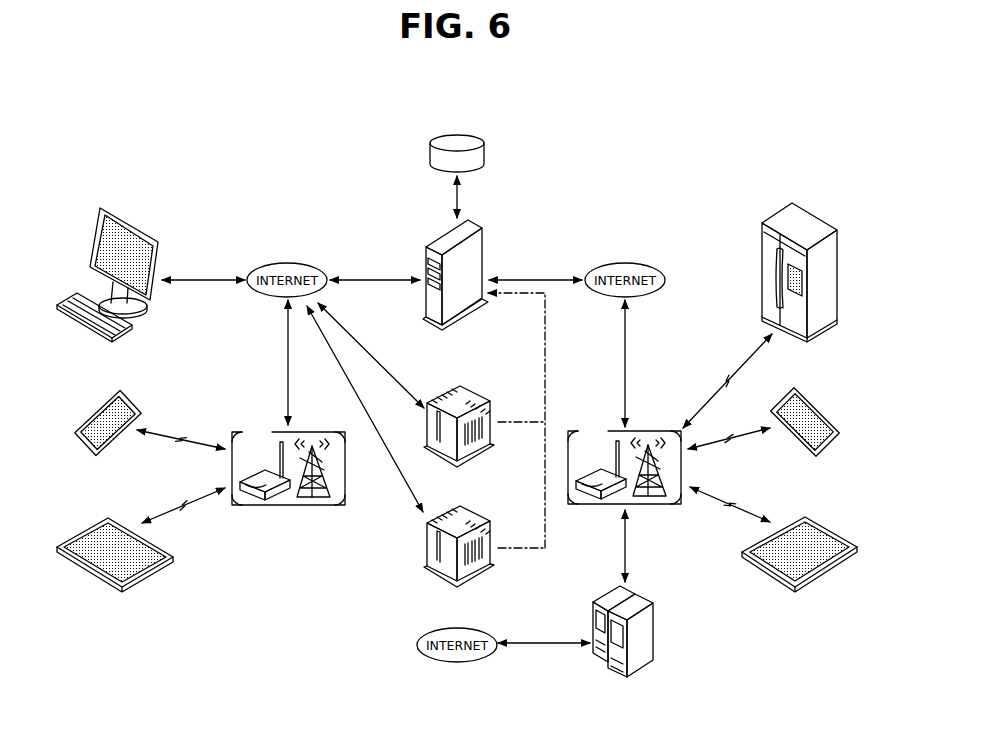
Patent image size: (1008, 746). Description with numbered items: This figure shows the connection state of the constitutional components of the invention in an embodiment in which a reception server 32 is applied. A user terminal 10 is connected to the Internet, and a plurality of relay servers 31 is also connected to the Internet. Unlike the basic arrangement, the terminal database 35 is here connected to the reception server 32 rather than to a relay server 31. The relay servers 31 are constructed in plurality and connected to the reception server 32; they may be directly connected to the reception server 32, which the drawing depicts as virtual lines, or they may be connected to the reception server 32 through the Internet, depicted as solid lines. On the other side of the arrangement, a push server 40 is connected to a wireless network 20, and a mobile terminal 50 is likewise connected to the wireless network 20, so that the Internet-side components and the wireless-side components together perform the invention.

The user terminal 10 is at (130, 220).
The wireless network 20 is at (237, 438).
The relay server 31 is at (477, 390).
The reception server 32 is at (435, 238).
The terminal database 35 is at (485, 155).
The push server 40 is at (647, 628).
The mobile terminal 50 is at (782, 218).